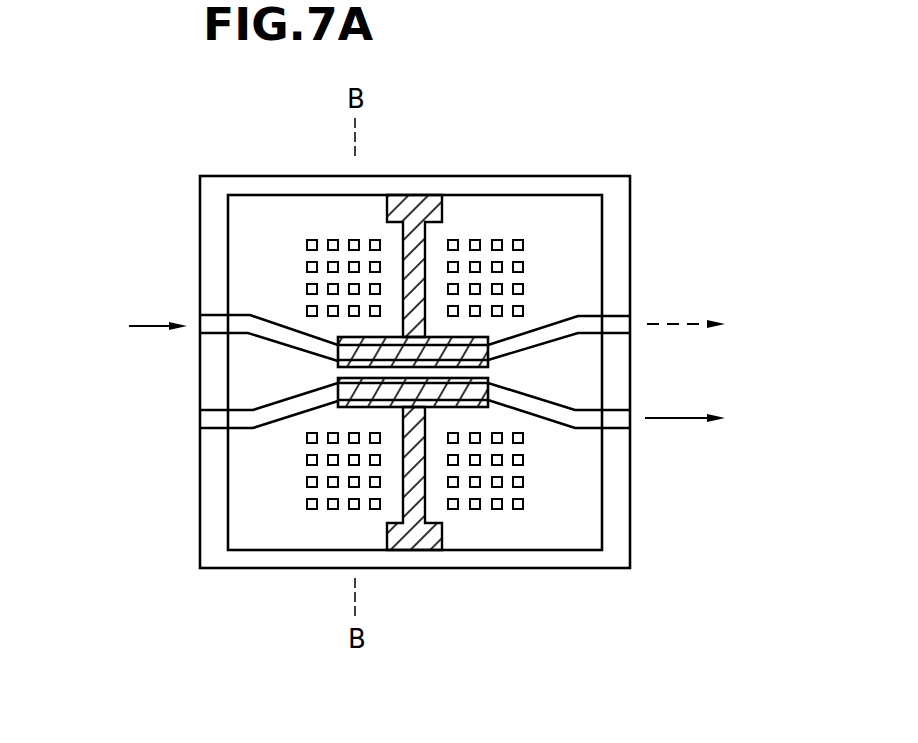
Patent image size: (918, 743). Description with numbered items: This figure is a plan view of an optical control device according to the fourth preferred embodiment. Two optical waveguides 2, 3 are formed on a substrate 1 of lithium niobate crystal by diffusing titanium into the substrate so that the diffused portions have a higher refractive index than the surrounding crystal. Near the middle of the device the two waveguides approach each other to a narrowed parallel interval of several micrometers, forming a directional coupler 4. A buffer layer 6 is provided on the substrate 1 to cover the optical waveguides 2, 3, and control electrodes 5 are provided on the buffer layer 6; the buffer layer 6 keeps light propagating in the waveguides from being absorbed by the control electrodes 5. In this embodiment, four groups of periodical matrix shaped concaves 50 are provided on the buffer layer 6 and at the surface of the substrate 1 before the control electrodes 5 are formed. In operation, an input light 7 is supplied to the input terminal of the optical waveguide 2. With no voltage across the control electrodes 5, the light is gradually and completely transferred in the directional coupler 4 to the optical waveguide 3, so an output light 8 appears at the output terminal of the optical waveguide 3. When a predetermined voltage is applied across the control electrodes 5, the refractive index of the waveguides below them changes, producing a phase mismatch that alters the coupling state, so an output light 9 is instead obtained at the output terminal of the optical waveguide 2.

The substrate 1 is at (613, 187).
The optical waveguide 2 is at (252, 327).
The optical waveguide 3 is at (252, 420).
The directional coupler 4 is at (449, 370).
The control electrode 5 is at (410, 197).
The buffer layer 6 is at (565, 530).
The input light 7 is at (152, 327).
The output light 8 is at (690, 420).
The output light 9 is at (690, 326).
The periodical matrix shaped concaves 50 is at (660, 510).